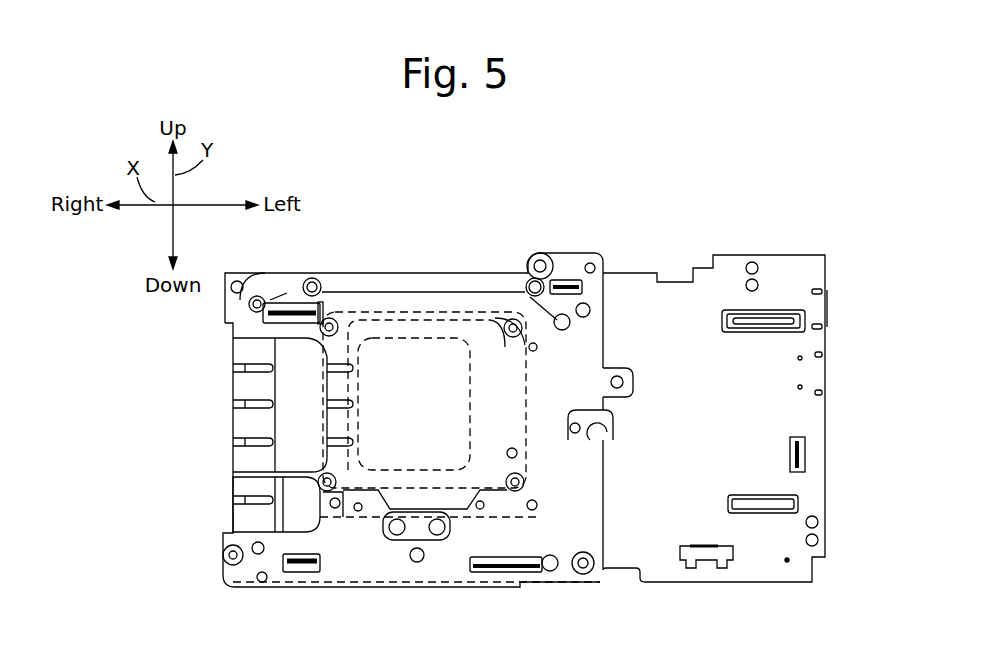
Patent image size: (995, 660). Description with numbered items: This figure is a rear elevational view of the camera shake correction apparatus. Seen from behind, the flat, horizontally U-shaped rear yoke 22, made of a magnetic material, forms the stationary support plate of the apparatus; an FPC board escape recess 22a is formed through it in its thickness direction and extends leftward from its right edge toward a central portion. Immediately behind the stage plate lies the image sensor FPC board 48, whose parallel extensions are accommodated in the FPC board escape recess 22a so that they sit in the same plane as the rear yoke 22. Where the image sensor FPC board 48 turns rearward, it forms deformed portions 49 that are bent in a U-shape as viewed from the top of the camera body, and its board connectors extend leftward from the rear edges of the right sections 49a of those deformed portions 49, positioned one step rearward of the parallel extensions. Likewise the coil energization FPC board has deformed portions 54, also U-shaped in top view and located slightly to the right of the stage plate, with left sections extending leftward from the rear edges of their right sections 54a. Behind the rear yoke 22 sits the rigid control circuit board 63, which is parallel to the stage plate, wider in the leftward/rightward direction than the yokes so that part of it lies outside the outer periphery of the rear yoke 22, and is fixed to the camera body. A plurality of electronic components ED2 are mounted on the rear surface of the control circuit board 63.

The rear yoke 22 is at (425, 288).
The FPC board escape recess 22a is at (455, 313).
The image sensor FPC board 48 is at (396, 352).
The deformed portions 49 is at (238, 405).
The right sections 49a is at (240, 432).
The deformed portions 54 is at (221, 504).
The right sections 54a is at (240, 496).
The control circuit board 63 is at (787, 272).
The electronic components ED2 is at (305, 307).